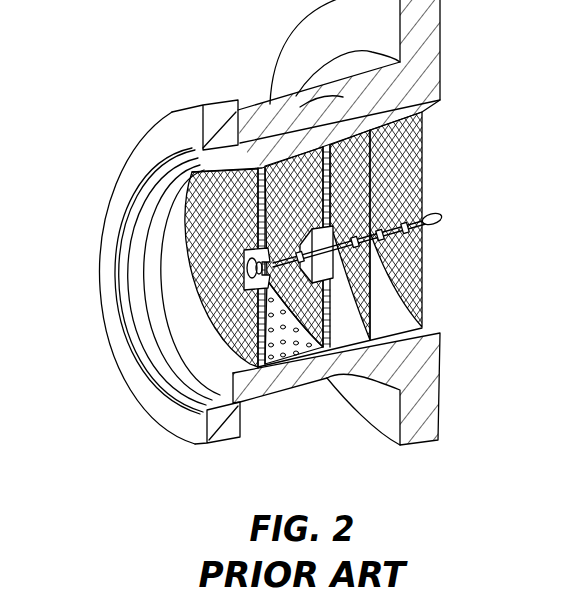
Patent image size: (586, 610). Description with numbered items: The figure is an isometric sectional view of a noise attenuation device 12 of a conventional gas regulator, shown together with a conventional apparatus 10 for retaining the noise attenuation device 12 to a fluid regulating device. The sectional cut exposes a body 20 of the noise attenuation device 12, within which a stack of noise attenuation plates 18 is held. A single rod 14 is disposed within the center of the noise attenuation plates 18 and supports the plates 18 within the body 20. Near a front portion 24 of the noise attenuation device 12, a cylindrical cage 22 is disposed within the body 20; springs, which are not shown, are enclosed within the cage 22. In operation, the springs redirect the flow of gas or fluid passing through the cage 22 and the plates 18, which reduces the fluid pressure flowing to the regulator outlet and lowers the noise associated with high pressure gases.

The noise attenuation device 12 is at (79, 84).
The cage 22 is at (190, 245).
The apparatus 10 is at (403, 266).
The noise attenuation plates 18 is at (360, 173).
The rod 14 is at (421, 243).
The body 20 is at (310, 372).
The front portion 24 is at (250, 388).